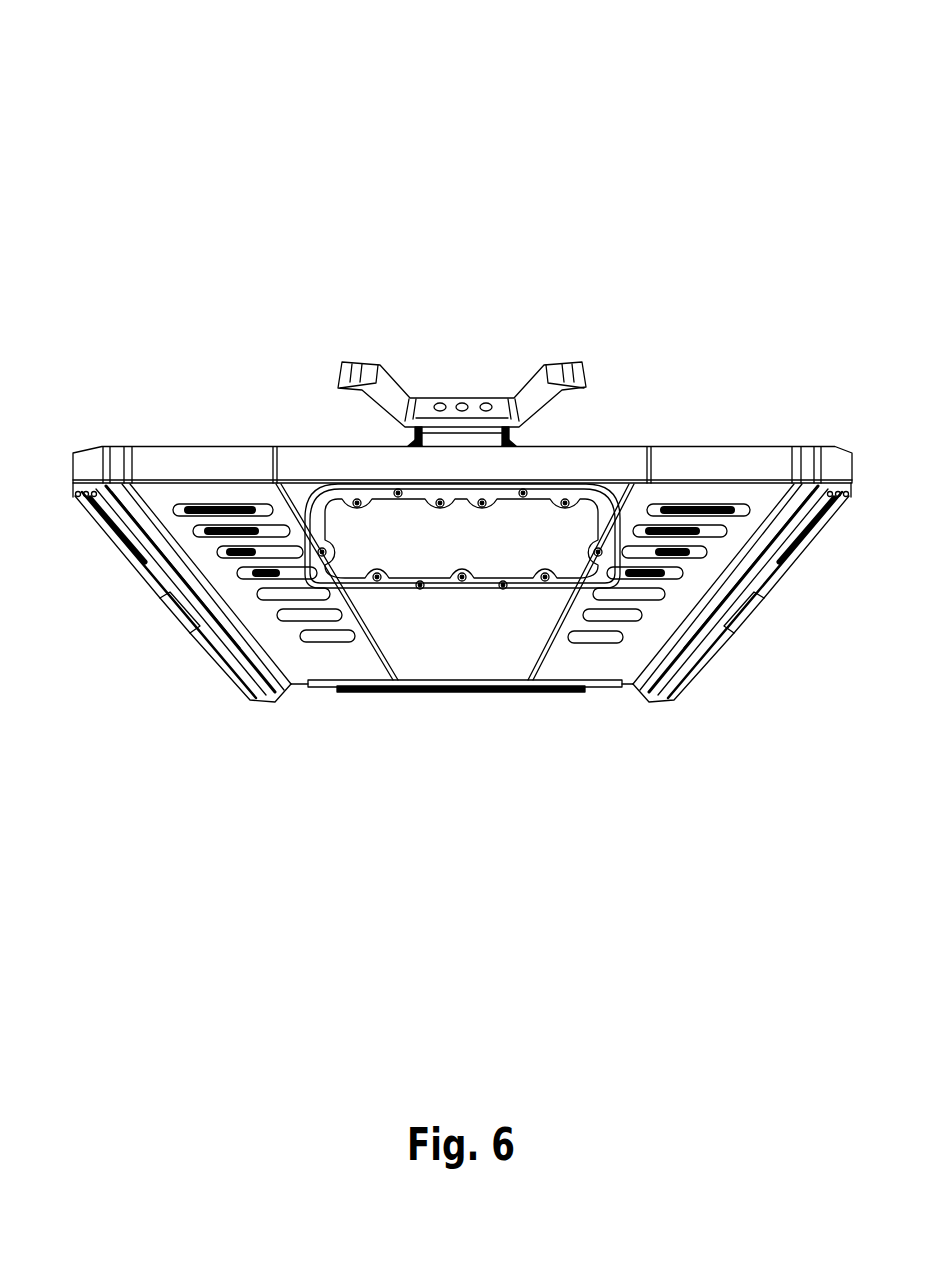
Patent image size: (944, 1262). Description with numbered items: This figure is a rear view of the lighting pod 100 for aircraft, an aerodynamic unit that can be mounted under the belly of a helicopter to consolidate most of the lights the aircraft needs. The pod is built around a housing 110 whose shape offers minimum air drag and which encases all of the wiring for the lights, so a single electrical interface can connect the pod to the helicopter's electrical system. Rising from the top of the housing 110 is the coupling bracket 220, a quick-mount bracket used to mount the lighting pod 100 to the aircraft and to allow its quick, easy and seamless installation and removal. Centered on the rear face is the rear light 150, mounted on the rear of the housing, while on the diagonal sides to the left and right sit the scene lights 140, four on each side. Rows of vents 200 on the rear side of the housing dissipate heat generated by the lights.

The lighting pod 100 is at (707, 125).
The housing 110 is at (748, 445).
The scene lights 140 is at (231, 636).
The rear light 150 is at (553, 527).
The vents 200 is at (596, 645).
The coupling bracket 220 is at (566, 364).